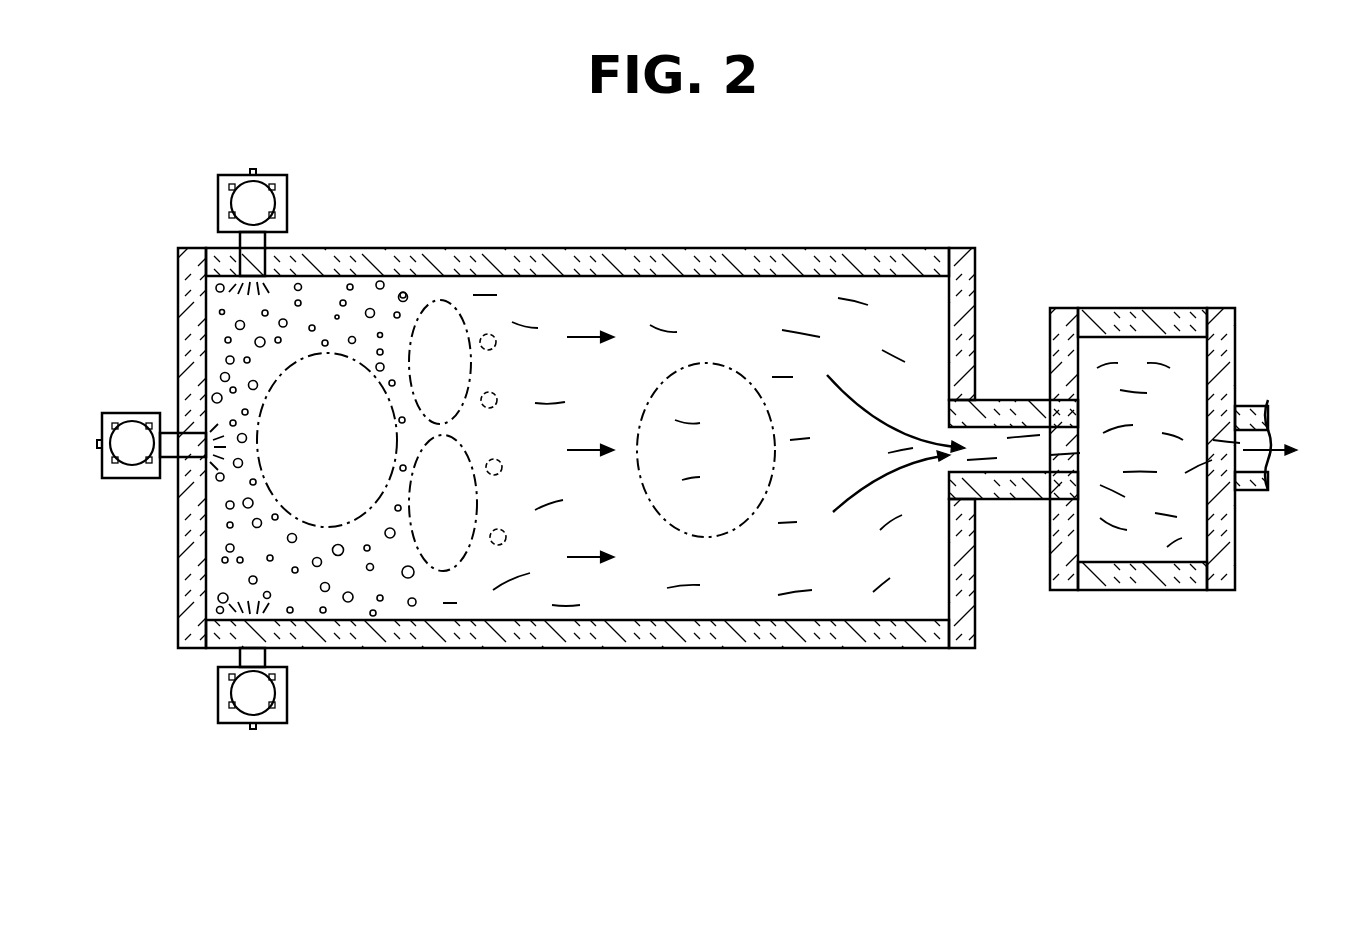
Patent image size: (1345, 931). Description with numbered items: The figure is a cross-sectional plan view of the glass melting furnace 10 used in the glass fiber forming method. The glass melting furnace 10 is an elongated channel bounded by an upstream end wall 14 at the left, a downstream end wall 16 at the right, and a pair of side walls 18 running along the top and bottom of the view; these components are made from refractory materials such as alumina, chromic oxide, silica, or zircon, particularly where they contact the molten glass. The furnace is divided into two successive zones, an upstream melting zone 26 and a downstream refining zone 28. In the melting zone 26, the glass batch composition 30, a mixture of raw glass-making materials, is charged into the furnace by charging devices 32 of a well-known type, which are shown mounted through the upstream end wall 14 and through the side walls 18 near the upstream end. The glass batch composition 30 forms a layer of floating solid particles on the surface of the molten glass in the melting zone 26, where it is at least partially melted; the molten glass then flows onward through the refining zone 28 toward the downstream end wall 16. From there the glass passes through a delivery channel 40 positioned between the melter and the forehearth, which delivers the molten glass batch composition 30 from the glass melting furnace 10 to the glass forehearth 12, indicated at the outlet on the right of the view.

The glass melting furnace 10 is at (875, 222).
The glass forehearth 12 is at (1139, 439).
The upstream end wall 14 is at (178, 540).
The downstream end wall 16 is at (976, 298).
The side walls 18 is at (538, 248).
The upstream melting zone 26 is at (327, 440).
The downstream refining zone 28 is at (801, 450).
The glass batch composition 30 is at (257, 343).
The charging device 32 is at (287, 198).
The delivery channel 40 is at (1247, 406).